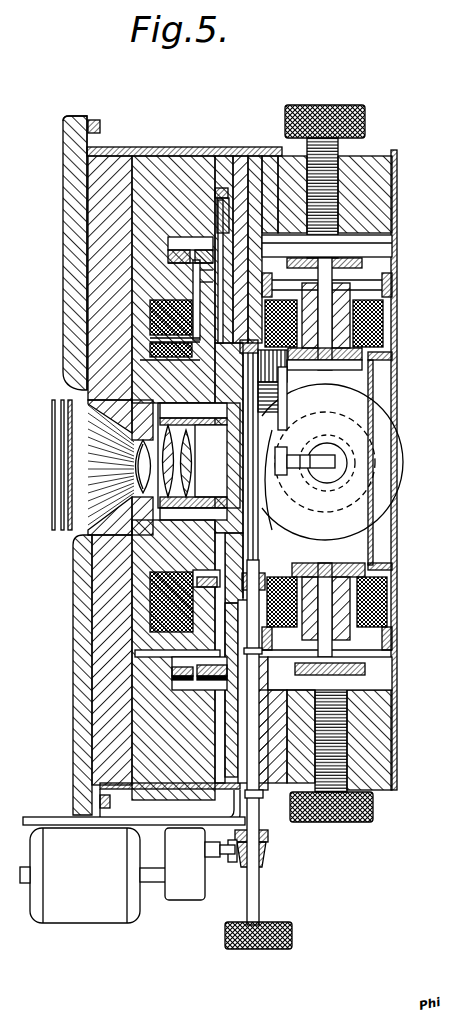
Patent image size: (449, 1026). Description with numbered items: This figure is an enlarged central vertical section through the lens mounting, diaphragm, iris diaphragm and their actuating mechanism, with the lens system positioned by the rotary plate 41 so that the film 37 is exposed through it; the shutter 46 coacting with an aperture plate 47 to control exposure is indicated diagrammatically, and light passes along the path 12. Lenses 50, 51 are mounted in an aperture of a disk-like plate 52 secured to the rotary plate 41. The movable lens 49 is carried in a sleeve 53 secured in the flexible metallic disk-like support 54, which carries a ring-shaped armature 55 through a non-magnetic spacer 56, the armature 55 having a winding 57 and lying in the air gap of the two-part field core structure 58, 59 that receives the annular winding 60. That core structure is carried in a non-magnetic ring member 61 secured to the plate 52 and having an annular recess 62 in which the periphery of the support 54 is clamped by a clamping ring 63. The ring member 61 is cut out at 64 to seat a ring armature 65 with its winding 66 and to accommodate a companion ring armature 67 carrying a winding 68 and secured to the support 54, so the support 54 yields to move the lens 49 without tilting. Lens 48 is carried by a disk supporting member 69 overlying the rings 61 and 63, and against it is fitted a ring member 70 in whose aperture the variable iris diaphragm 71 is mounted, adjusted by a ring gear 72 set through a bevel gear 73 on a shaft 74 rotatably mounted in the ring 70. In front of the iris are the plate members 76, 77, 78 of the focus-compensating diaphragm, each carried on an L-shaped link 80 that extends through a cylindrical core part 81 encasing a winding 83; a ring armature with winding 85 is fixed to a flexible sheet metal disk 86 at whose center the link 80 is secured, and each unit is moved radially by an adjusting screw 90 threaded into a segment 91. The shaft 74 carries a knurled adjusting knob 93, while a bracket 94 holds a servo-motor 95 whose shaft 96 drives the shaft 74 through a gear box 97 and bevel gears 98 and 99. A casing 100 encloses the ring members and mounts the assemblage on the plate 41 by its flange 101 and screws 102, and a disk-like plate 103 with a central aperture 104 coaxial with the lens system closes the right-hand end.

The light beam 12 is at (268, 577).
The film 37 is at (50, 417).
The rotary plate 41 is at (66, 225).
The shutter 46 is at (60, 405).
The aperture plate 47 is at (68, 398).
The lens 48 is at (185, 463).
The movable lens 49 is at (160, 535).
The lens 50 is at (143, 462).
The lens 51 is at (134, 470).
The disk-like plate 52 is at (95, 205).
The sleeve 53 is at (183, 437).
The disk-like support 54 is at (143, 548).
The ring-shaped armature 55 is at (200, 343).
The non-magnetic spacer 56 is at (193, 413).
The winding 57 is at (193, 340).
The field core structure part 58 is at (147, 625).
The field core structure part 59 is at (147, 362).
The annular winding 60 is at (150, 310).
The ring member 61 is at (143, 157).
The annular recess 62 is at (226, 160).
The clamping ring 63 is at (255, 176).
The cut out 64 is at (172, 242).
The ring armature 65 is at (175, 262).
The winding 66 is at (181, 248).
The companion ring armature 67 is at (213, 272).
The winding 68 is at (215, 190).
The disk supporting member 69 is at (207, 283).
The ring member 70 is at (270, 152).
The variable iris diaphragm 71 is at (248, 463).
The ring gear 72 is at (222, 352).
The bevel gear 73 is at (318, 567).
The shaft 74 is at (226, 683).
The plate member 76 is at (280, 427).
The plate member 77 is at (297, 440).
The plate member 78 is at (280, 520).
The L-shaped link 80 is at (325, 375).
The cylindrical core part 81 is at (340, 317).
The winding 83 is at (377, 327).
The winding 85 is at (363, 290).
The flexible resilient sheet metal disk 86 is at (382, 270).
The adjusting screw 90 is at (343, 140).
The segment 91 is at (377, 178).
The knurled adjusting knob 93 is at (293, 933).
The bracket 94 is at (50, 803).
The servo-motor 95 is at (80, 875).
The motor shaft 96 is at (147, 877).
The gear box 97 is at (200, 864).
The bevel gear 98 is at (262, 867).
The bevel gear 99 is at (365, 670).
The casing 100 is at (129, 145).
The flange 101 is at (102, 812).
The screws 102 is at (110, 802).
The disk-like plate 103 is at (395, 215).
The central aperture 104 is at (373, 400).